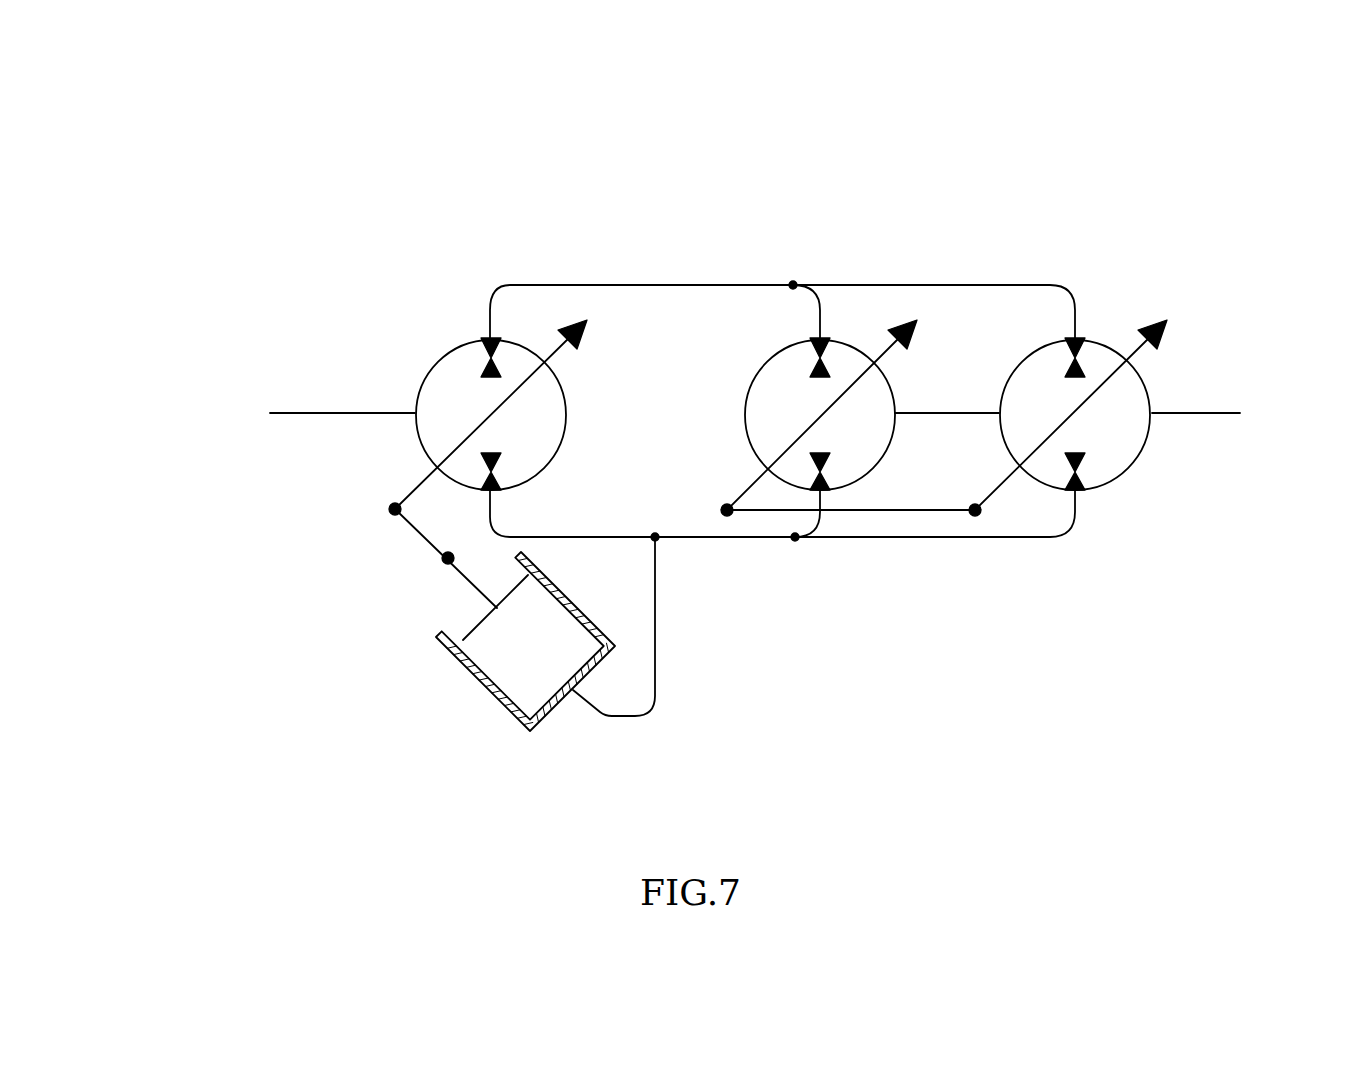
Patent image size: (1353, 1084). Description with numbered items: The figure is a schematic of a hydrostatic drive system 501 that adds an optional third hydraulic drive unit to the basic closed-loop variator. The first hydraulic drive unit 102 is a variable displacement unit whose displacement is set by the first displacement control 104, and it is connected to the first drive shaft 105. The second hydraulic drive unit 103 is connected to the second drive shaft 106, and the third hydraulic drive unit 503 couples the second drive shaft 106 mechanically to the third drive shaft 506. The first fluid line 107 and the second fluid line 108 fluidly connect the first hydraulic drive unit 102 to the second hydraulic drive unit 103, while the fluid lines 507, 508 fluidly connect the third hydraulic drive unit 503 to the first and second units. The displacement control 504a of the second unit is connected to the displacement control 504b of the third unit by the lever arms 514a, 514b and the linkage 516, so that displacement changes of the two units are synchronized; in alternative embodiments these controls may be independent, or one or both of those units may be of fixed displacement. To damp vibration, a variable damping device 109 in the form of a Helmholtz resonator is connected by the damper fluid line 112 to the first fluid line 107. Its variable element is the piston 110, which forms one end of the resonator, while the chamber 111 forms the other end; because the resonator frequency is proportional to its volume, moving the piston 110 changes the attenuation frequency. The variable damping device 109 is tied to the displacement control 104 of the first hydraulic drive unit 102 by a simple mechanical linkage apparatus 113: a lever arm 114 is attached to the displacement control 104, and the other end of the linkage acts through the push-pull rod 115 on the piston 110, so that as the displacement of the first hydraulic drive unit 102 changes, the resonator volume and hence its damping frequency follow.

The hydrostatic drive system 501 is at (225, 155).
The first hydraulic drive unit 102 is at (420, 375).
The second hydraulic drive unit 103 is at (757, 368).
The third hydraulic drive unit 503 is at (1110, 355).
The first displacement control 104 is at (547, 356).
The displacement control of second hydraulic drive unit 504a is at (885, 352).
The displacement control of third hydraulic drive unit 504b is at (1150, 368).
The first drive shaft 105 is at (333, 413).
The second drive shaft 106 is at (917, 413).
The third drive shaft 506 is at (1207, 413).
The second fluid line 108 is at (688, 285).
The fluid line 508 is at (1017, 285).
The first fluid line 107 is at (750, 538).
The fluid line 507 is at (930, 537).
The linkage 516 is at (897, 510).
The lever arm 514a is at (753, 483).
The lever arm 514b is at (997, 490).
The mechanical linkage apparatus 113 is at (277, 557).
The lever arm 114 is at (412, 493).
The push-pull rod 115 is at (413, 535).
The variable damping device 109 is at (348, 735).
The piston 110 is at (482, 623).
The chamber 111 is at (493, 696).
The damper fluid line 112 is at (655, 691).